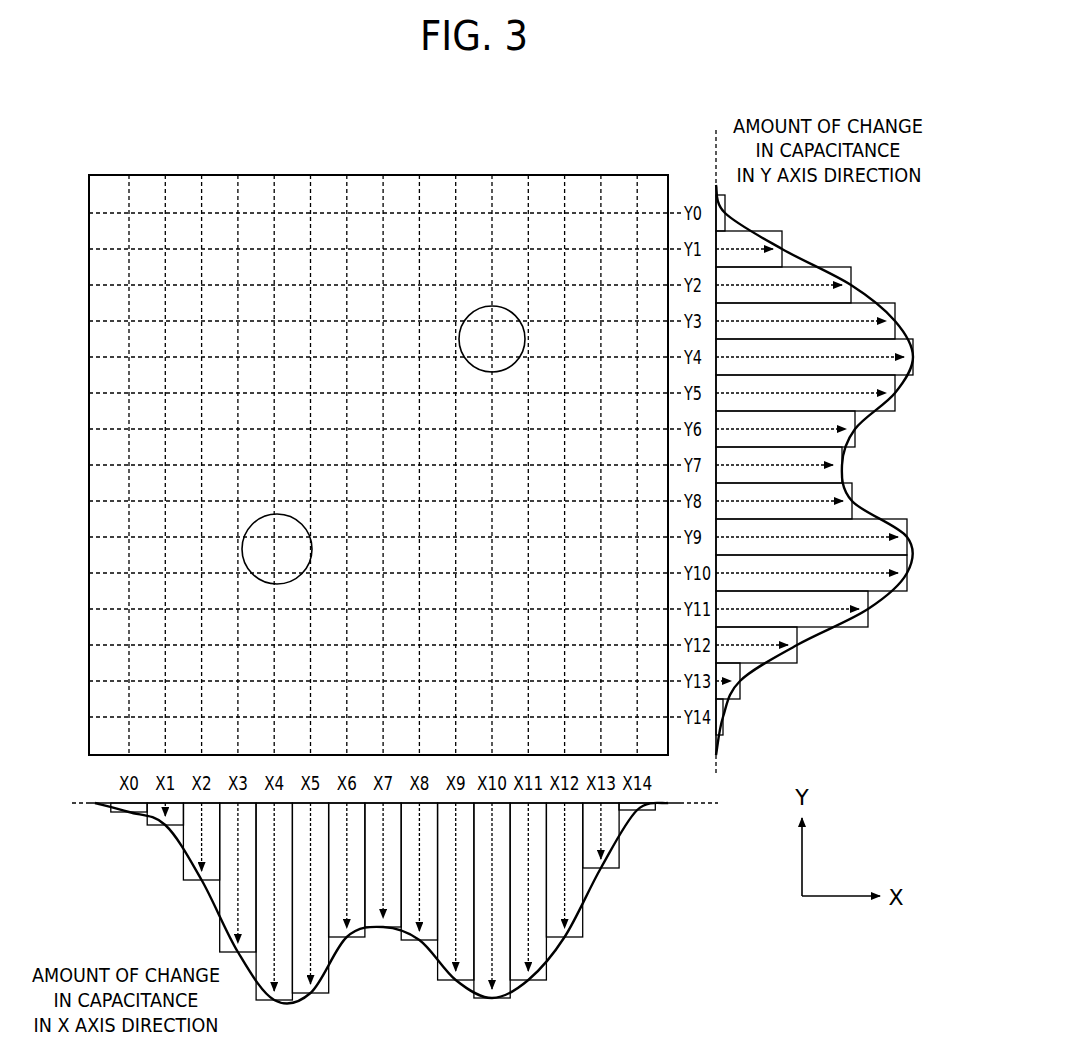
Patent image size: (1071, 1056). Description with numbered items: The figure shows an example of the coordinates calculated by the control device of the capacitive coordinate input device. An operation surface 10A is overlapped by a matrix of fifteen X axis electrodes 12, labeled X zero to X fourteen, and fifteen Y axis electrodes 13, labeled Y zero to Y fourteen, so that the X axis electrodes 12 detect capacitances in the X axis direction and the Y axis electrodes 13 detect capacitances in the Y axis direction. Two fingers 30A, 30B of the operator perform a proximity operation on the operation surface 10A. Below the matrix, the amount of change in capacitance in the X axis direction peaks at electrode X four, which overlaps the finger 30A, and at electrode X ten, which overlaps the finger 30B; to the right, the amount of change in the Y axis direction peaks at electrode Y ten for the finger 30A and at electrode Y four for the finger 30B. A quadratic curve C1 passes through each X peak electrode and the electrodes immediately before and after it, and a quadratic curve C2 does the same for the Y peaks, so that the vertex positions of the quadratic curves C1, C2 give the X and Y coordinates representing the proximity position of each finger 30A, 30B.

The operation surface 10A is at (217, 188).
The X axis electrodes 12 is at (313, 192).
The Y axis electrodes 13 is at (582, 210).
The finger 30A is at (263, 533).
The finger 30B is at (481, 323).
The quadratic curve C1 is at (593, 892).
The quadratic curve C2 is at (818, 640).